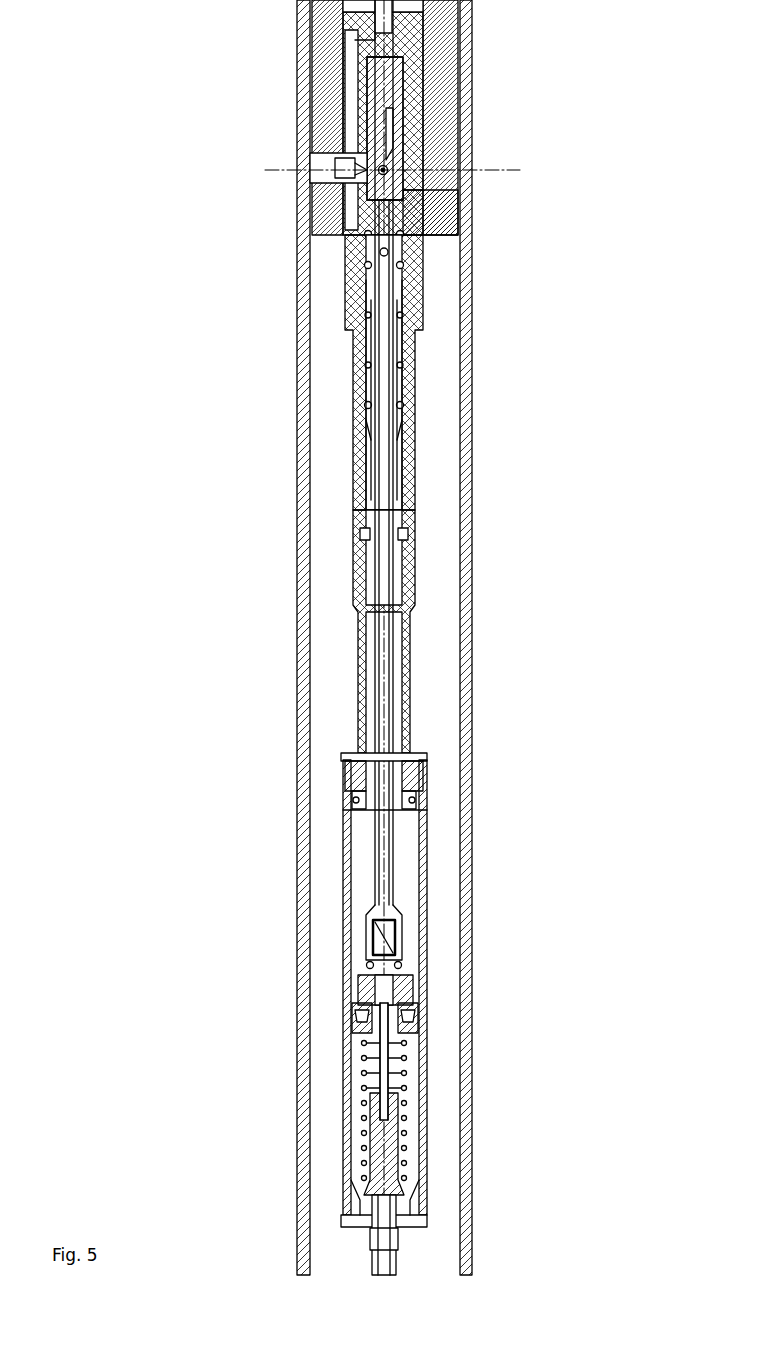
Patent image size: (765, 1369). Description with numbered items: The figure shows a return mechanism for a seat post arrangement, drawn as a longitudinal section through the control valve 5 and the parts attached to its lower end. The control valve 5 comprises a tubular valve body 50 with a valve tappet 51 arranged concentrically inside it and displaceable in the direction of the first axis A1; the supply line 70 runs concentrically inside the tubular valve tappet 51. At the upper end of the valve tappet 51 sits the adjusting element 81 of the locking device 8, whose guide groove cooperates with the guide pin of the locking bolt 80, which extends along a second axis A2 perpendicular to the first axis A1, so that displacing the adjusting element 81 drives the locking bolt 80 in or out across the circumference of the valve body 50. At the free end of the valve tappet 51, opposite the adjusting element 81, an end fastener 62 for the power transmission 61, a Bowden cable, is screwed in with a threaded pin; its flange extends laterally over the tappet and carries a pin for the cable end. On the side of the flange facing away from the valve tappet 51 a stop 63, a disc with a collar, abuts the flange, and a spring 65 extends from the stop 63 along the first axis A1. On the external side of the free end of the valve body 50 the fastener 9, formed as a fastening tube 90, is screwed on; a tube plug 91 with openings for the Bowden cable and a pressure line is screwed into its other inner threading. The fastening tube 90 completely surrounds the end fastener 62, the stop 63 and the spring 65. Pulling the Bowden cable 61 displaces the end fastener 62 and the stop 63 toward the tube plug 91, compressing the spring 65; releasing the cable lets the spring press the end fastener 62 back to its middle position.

The control valve 5 is at (176, 380).
The locking device 8 is at (176, 210).
The fastener 9 is at (574, 859).
The valve body 50 is at (413, 287).
The valve tappet 51 is at (400, 425).
The power transmission 61 is at (385, 1172).
The end fastener 62 is at (365, 980).
The stop 63 is at (355, 1017).
The spring 65 is at (365, 1075).
The supply line 70 is at (385, 665).
The locking bolt 80 is at (338, 171).
The adjusting element 81 is at (400, 90).
The fastening tube 90 is at (423, 914).
The tube plug 91 is at (410, 1205).
The first axis A1 is at (410, 63).
The second axis A2 is at (505, 170).